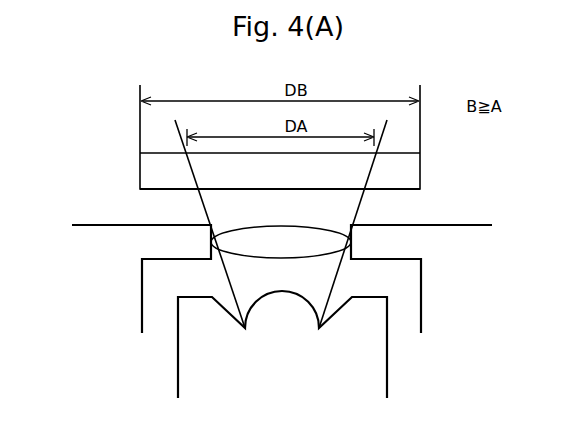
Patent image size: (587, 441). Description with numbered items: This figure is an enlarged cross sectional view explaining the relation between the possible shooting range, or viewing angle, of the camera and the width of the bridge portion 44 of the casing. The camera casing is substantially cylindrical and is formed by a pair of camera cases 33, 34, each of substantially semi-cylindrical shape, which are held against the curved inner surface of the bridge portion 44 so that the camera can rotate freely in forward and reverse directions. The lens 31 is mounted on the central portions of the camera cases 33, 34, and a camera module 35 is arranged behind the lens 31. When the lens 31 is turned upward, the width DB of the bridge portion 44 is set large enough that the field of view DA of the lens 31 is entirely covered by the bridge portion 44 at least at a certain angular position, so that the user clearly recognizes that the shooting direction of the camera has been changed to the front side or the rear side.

The lens 31 is at (316, 238).
The camera case 33 is at (122, 238).
The camera case 34 is at (269, 246).
The camera module 35 is at (375, 369).
The bridge portion 44 is at (398, 172).